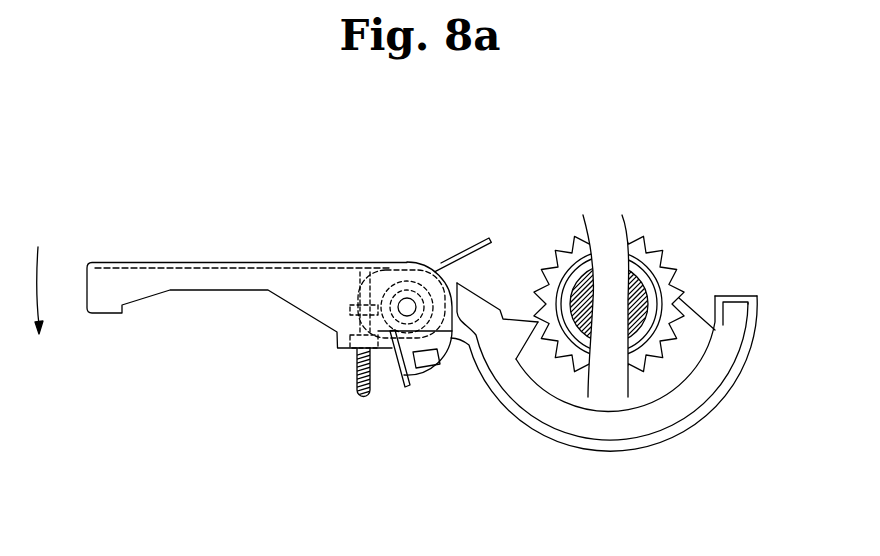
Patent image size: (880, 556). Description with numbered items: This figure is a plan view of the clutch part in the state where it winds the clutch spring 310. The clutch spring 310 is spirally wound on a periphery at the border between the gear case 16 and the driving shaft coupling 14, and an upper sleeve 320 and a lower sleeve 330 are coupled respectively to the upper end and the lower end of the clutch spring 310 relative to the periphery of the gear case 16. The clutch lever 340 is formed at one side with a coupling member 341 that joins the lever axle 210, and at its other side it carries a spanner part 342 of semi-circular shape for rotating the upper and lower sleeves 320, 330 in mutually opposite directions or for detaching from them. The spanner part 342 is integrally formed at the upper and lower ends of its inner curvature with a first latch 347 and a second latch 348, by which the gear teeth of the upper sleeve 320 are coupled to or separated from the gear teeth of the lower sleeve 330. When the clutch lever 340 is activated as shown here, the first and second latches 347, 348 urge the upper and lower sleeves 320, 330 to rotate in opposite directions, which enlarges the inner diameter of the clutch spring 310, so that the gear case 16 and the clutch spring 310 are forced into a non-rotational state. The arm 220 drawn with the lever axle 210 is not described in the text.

The driving shaft coupling 14 is at (648, 300).
The gear case 16 is at (553, 248).
The lever axle 210 is at (406, 285).
The lever arm 220 is at (124, 281).
The clutch spring 310 is at (659, 242).
The upper sleeve 320 is at (583, 237).
The lower sleeve 330 is at (682, 268).
The clutch lever 340 is at (627, 409).
The coupling member 341 is at (357, 356).
The spanner part 342 is at (685, 405).
The first latch 347 is at (518, 335).
The second latch 348 is at (703, 305).